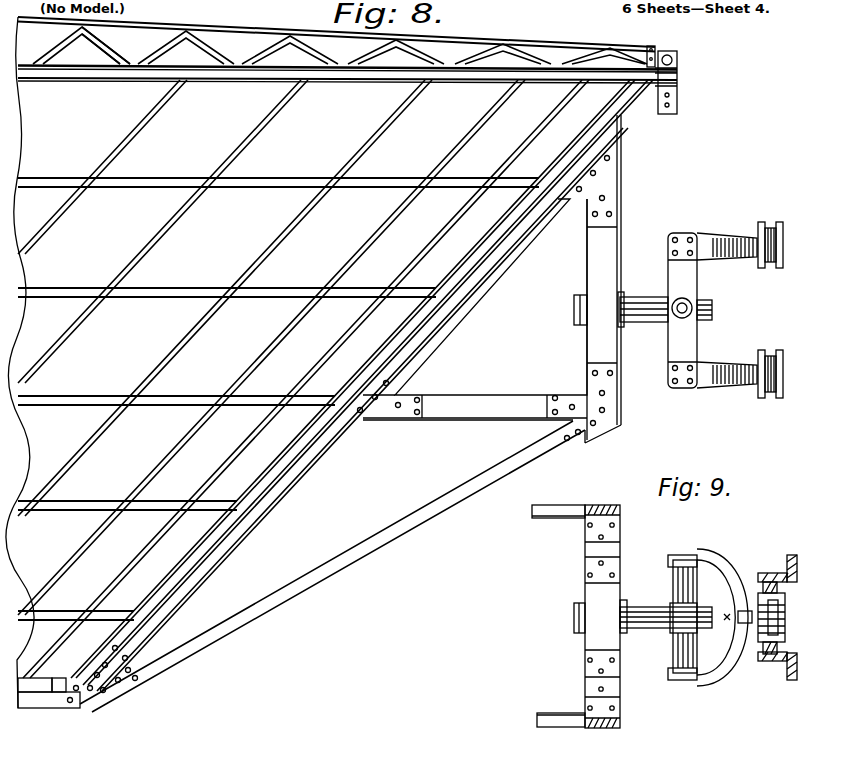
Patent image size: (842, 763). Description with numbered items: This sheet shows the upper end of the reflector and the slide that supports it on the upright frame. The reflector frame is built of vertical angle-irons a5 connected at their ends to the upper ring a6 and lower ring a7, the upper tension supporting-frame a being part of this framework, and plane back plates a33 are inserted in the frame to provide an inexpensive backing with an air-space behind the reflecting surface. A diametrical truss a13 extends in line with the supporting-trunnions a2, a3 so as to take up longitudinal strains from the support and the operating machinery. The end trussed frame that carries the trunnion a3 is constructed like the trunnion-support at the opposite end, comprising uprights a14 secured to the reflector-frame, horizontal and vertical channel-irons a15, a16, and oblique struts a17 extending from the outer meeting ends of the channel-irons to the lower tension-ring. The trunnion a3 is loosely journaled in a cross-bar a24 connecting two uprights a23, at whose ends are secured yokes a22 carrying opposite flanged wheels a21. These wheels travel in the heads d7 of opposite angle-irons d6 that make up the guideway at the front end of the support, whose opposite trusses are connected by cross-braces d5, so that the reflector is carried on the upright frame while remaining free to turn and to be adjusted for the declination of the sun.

In FIG. 8, the upper tension supporting-frame a is at (347, 65).
In FIG. 9, the trunnion a2 is at (787, 626).
In FIG. 8, the trunnion a3 is at (642, 298).
In FIG. 9, the trunnion a3 is at (657, 621).
In FIG. 8, the vertical angle-iron a5 is at (307, 209).
In FIG. 8, the upper ring a6 is at (347, 85).
In FIG. 8, the lower ring a7 is at (58, 705).
In FIG. 8, the diametrical truss a13 is at (112, 54).
In FIG. 8, the upright a14 is at (342, 442).
In FIG. 8, the horizontal channel-iron a15 is at (480, 393).
In FIG. 9, the horizontal channel-iron a15 is at (558, 511).
In FIG. 8, the vertical channel-iron a16 is at (590, 259).
In FIG. 9, the vertical channel-iron a16 is at (605, 506).
In FIG. 8, the oblique strut a17 is at (384, 526).
In FIG. 8, the flanged wheel a21 is at (778, 350).
In FIG. 8, the yoke a22 is at (725, 233).
In FIG. 9, the yoke a22 is at (722, 684).
In FIG. 8, the upright a23 is at (694, 333).
In FIG. 9, the upright a23 is at (670, 567).
In FIG. 8, the cross-bar a24 is at (587, 346).
In FIG. 9, the cross-bar a24 is at (595, 633).
In FIG. 8, the plane back plate a33 is at (303, 379).
In FIG. 9, the cross-brace d5 is at (740, 634).
In FIG. 9, the angle-iron d6 is at (777, 573).
In FIG. 9, the head d7 is at (778, 594).